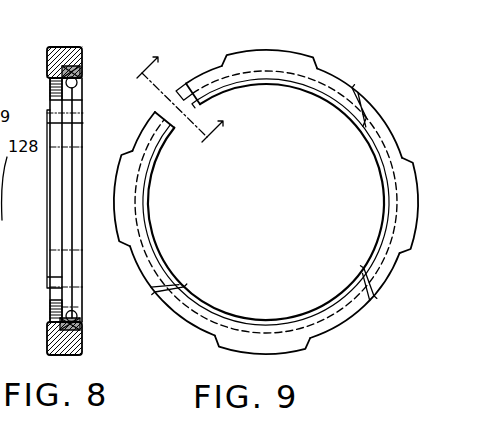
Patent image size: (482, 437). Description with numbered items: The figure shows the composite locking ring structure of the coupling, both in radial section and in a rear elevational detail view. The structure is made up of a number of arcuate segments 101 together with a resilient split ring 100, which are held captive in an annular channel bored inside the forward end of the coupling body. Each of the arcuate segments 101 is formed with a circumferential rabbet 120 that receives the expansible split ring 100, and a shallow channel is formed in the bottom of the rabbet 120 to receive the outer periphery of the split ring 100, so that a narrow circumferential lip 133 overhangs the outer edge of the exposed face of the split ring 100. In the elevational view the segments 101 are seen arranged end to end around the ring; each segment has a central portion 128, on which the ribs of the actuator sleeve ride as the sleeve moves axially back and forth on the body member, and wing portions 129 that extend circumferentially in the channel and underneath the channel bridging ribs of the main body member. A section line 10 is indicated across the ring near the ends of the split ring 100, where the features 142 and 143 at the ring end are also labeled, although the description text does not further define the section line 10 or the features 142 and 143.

In FIG. 8, the resilient split ring 100 is at (78, 132).
In FIG. 8, the arcuate segments 101 is at (82, 54).
In FIG. 9, the arcuate segments 101 is at (314, 69).
In FIG. 8, the circumferential rabbet 120 is at (78, 82).
In FIG. 8, the central portions 128 is at (55, 47).
In FIG. 9, the central portions 128 is at (296, 50).
In FIG. 9, the wing portions 129 is at (368, 110).
In FIG. 8, the circumferential lip 133 is at (82, 312).
In FIG. 9, the end notch 142 is at (191, 90).
In FIG. 9, the end face line 143 is at (212, 88).
In FIG. 9, the section line 10- 10 is at (183, 87).